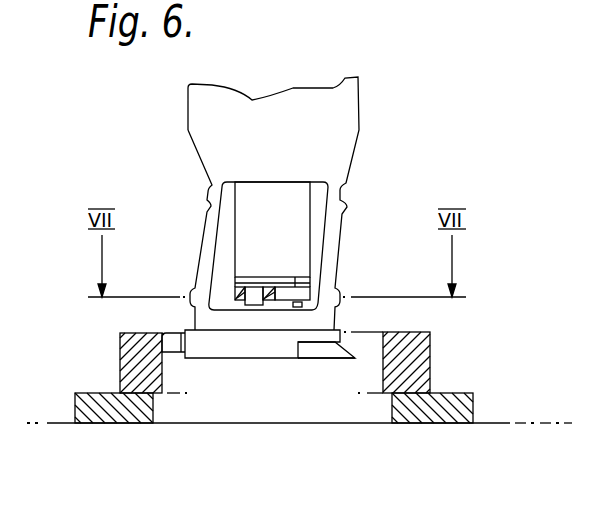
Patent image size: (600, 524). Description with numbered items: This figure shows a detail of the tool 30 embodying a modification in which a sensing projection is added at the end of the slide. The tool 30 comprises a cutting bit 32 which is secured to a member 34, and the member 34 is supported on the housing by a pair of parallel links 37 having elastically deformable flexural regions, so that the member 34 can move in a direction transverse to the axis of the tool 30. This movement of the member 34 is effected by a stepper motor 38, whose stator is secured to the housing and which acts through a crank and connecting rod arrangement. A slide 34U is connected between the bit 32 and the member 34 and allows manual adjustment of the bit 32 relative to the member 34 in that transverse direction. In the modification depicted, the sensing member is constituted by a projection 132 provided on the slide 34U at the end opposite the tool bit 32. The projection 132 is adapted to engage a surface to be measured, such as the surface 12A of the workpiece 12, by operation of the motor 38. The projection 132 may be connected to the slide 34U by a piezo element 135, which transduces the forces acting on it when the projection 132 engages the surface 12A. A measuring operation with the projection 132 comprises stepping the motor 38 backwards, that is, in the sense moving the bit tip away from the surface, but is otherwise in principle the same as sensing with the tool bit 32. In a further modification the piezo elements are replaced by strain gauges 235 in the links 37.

The tool 30 is at (358, 107).
The stepper motor 38 is at (253, 197).
The parallel links 37 is at (208, 213).
The strain gauges 235 is at (215, 289).
The projection 132 is at (163, 333).
The piezo element 135 is at (187, 347).
The member 34 is at (260, 320).
The slide 34U is at (287, 350).
The cutting bit 32 is at (330, 350).
The workpiece 12 is at (425, 360).
The surface 12A is at (167, 380).